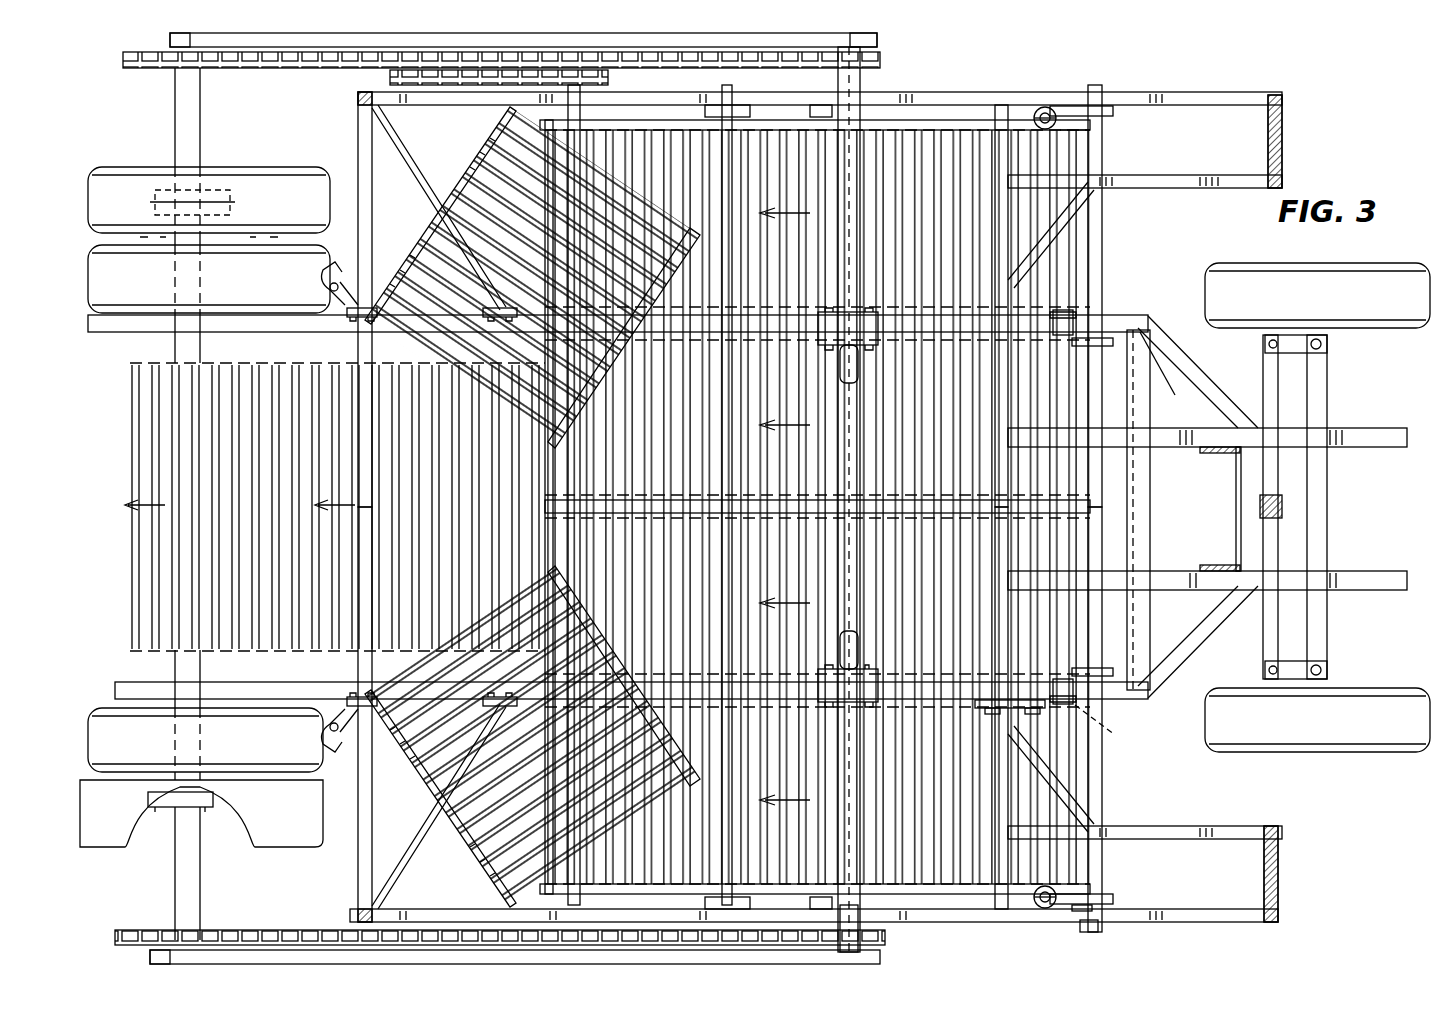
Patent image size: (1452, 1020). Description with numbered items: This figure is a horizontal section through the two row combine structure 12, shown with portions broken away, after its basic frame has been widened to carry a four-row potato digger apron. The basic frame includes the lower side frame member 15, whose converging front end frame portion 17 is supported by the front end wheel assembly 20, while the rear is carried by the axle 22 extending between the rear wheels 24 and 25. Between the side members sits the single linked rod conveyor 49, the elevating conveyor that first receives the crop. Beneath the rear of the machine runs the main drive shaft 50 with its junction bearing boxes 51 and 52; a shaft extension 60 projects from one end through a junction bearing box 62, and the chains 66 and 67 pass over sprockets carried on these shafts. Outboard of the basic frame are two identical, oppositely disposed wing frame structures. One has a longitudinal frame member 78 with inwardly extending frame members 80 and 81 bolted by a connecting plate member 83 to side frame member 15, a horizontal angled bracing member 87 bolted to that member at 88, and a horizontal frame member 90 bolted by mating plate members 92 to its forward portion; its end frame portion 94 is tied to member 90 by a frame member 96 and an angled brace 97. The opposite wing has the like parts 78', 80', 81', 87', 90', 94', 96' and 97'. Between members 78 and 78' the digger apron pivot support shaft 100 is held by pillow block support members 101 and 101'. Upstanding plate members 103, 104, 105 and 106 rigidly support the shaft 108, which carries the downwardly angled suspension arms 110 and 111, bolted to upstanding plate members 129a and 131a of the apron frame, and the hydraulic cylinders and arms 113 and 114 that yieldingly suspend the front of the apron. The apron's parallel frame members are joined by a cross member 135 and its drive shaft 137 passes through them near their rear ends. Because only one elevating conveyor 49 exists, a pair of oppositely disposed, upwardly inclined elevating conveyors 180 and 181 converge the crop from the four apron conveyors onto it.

The two row combine structure 12 is at (1370, 520).
The lower side frame member 15 is at (150, 682).
The converging front end frame portion 17 is at (306, 335).
The front end wheel assembly 20 is at (1400, 305).
The axle 22 is at (175, 348).
The rear wheel 24 is at (148, 278).
The rear wheel 25 is at (142, 738).
The linked rod conveyor 49 is at (195, 443).
The main drive shaft 50 is at (836, 362).
The junction bearing box 51 is at (866, 352).
The junction bearing box 52 is at (855, 620).
The shaft extension 60 is at (870, 75).
The junction bearing box 62 is at (868, 920).
The chain 66 is at (310, 66).
The chain 67 is at (255, 930).
The longitudinal frame member 78 is at (814, 937).
The longitudinal frame member 78' is at (820, 87).
The inwardly extending frame member 80 is at (327, 714).
The inwardly extending frame member 80' is at (327, 299).
The inwardly extending frame member 81 is at (440, 798).
The inwardly extending frame member 81' is at (440, 215).
The connecting plate member 83 is at (345, 682).
The horizontal angled bracing member 87 is at (439, 806).
The horizontal angled bracing member 87' is at (439, 207).
The bolted connection 88 is at (520, 708).
The horizontal frame member 90 is at (1043, 736).
The horizontal frame member 90' is at (1061, 279).
The mating plate members 92 is at (985, 712).
The end frame portion 94 is at (1296, 874).
The end frame portion 94' is at (1301, 141).
The frame member 96 is at (1159, 714).
The frame member 96' is at (1138, 301).
The angled brace 97 is at (1088, 779).
The angled brace 97' is at (1091, 235).
The digger apron pivot support shaft 100 is at (725, 150).
The pillow block support member 101 is at (746, 863).
The pillow block support member 101' is at (800, 92).
The plate member 103 is at (1115, 106).
The plate member 104 is at (1110, 325).
The plate member 105 is at (1110, 665).
The plate member 106 is at (1120, 900).
The shaft 108 is at (1120, 545).
The suspension arm 110 is at (1100, 300).
The suspension arm 111 is at (1060, 700).
The hydraulic cylinder and arm 113 is at (1080, 128).
The hydraulic cylinder and arm 114 is at (1055, 912).
The upstanding plate member 129a is at (1100, 398).
The upstanding plate member 131a is at (1085, 700).
The cross member 135 is at (830, 545).
The drive shaft 137 is at (570, 470).
The elevating conveyor 180 is at (417, 408).
The elevating conveyor 181 is at (425, 598).